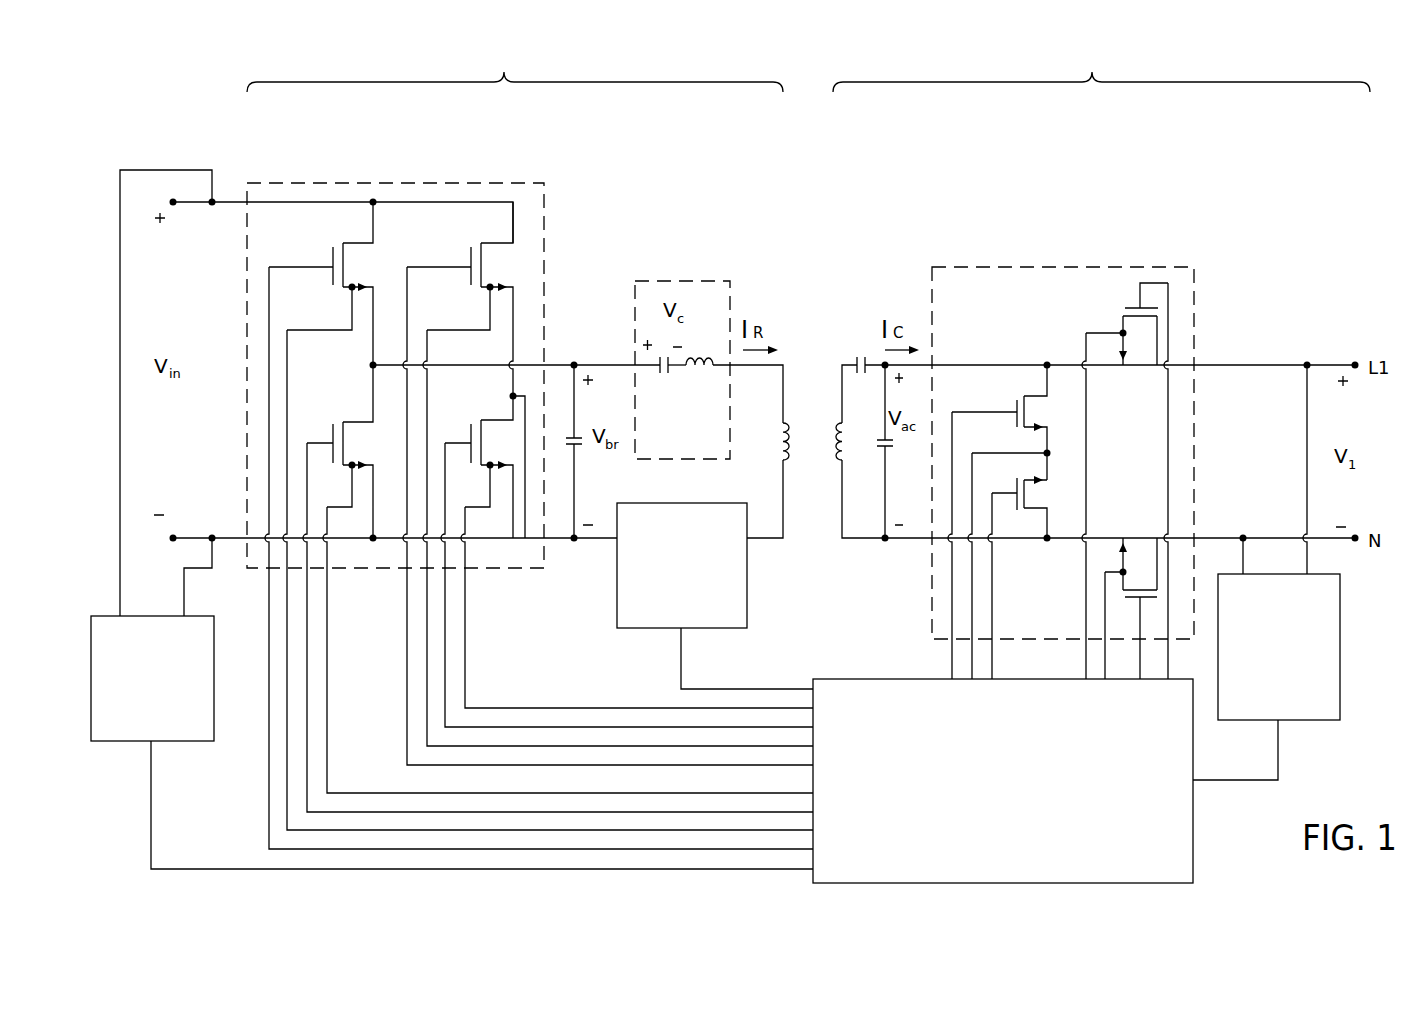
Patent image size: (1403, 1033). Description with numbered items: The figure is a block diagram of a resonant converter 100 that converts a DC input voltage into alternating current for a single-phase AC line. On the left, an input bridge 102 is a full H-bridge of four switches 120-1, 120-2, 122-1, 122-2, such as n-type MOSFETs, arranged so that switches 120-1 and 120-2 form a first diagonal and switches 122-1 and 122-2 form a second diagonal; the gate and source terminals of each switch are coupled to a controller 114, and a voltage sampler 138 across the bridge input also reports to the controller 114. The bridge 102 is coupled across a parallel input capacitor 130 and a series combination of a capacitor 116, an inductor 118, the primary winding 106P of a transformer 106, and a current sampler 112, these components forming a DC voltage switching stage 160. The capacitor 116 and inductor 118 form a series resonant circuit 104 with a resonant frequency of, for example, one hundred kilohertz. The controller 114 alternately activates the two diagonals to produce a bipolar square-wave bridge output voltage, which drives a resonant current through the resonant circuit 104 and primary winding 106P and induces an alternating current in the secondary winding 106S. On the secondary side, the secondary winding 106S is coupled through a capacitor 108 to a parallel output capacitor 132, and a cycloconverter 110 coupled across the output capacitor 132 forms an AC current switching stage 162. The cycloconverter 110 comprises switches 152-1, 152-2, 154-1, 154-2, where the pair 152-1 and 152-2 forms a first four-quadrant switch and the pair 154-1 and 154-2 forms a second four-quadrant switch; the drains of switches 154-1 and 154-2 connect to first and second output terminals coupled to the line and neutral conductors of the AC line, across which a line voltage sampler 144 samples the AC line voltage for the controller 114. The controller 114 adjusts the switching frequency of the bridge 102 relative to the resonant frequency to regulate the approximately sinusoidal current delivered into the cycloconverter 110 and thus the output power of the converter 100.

The resonant converter 100 is at (1331, 187).
The input bridge 102 is at (288, 183).
The series resonant circuit 104 is at (671, 280).
The transformer 106 is at (760, 444).
The primary winding 106P is at (777, 449).
The secondary winding 106S is at (828, 452).
The capacitor 108 is at (855, 358).
The cycloconverter 110 is at (990, 266).
The current sampler 112 is at (697, 604).
The controller 114 is at (1027, 805).
The capacitor 116 is at (658, 375).
The inductor 118 is at (700, 375).
The switch 120-1 is at (356, 243).
The switch 120-2 is at (477, 432).
The switch 122-1 is at (495, 243).
The switch 122-2 is at (336, 432).
The parallel input capacitor 130 is at (578, 448).
The parallel output capacitor 132 is at (890, 448).
The voltage sampler 138 is at (167, 719).
The line voltage sampler 144 is at (1297, 698).
The switch 152-1 is at (1040, 396).
The switch 152-2 is at (1036, 510).
The switch 154-1 is at (1130, 308).
The switch 154-2 is at (1130, 598).
The DC voltage switching stage 160 is at (515, 64).
The AC current switching stage 162 is at (1101, 64).